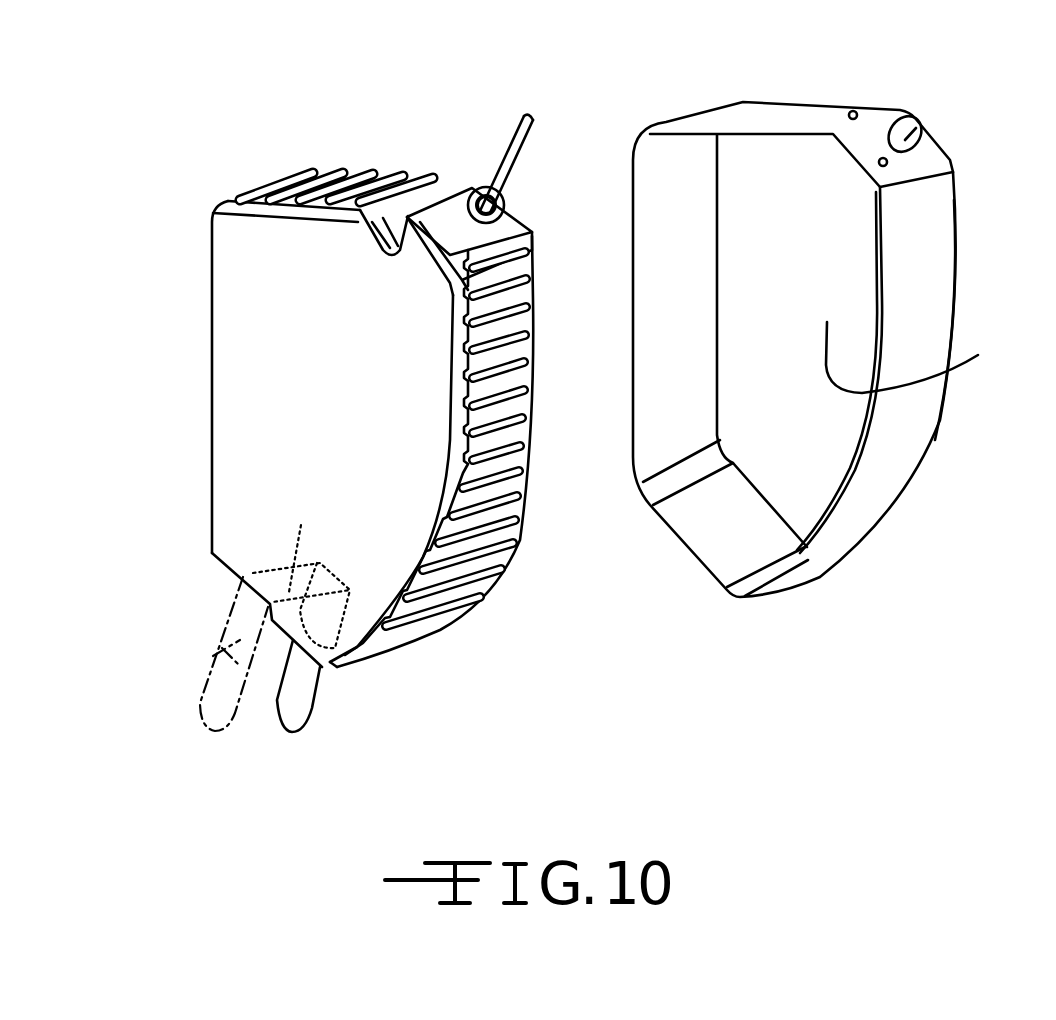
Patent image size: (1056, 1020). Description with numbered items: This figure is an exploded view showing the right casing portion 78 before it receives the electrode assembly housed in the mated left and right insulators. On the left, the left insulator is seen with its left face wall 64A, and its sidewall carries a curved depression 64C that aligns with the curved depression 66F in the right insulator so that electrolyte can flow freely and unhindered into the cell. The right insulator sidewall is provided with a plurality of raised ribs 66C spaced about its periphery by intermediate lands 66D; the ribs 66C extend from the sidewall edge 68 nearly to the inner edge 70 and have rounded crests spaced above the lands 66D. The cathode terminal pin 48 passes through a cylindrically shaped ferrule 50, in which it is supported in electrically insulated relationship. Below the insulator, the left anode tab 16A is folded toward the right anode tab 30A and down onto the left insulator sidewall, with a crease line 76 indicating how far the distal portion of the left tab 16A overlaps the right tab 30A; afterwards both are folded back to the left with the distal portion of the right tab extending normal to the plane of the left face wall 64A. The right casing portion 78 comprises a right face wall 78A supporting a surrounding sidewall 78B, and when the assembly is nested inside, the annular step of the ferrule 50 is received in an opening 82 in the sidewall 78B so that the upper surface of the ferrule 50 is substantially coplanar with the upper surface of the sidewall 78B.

The left anode tab 16A is at (353, 607).
The right anode tab 30A is at (304, 686).
The cathode terminal pin 48 is at (502, 157).
The ferrule 50 is at (507, 197).
The left face wall 64A is at (265, 400).
The curved depression 64C is at (357, 227).
The raised ribs 66C is at (528, 443).
The intermediate lands 66D is at (450, 466).
The curved depression 66F is at (397, 210).
The sidewall edge 68 is at (468, 330).
The inner edge 70 is at (543, 343).
The crease line 76 is at (126, 686).
The right casing portion 78 is at (795, 102).
The right face wall 78A is at (928, 357).
The surrounding sidewall 78B is at (922, 270).
The opening 82 is at (908, 134).